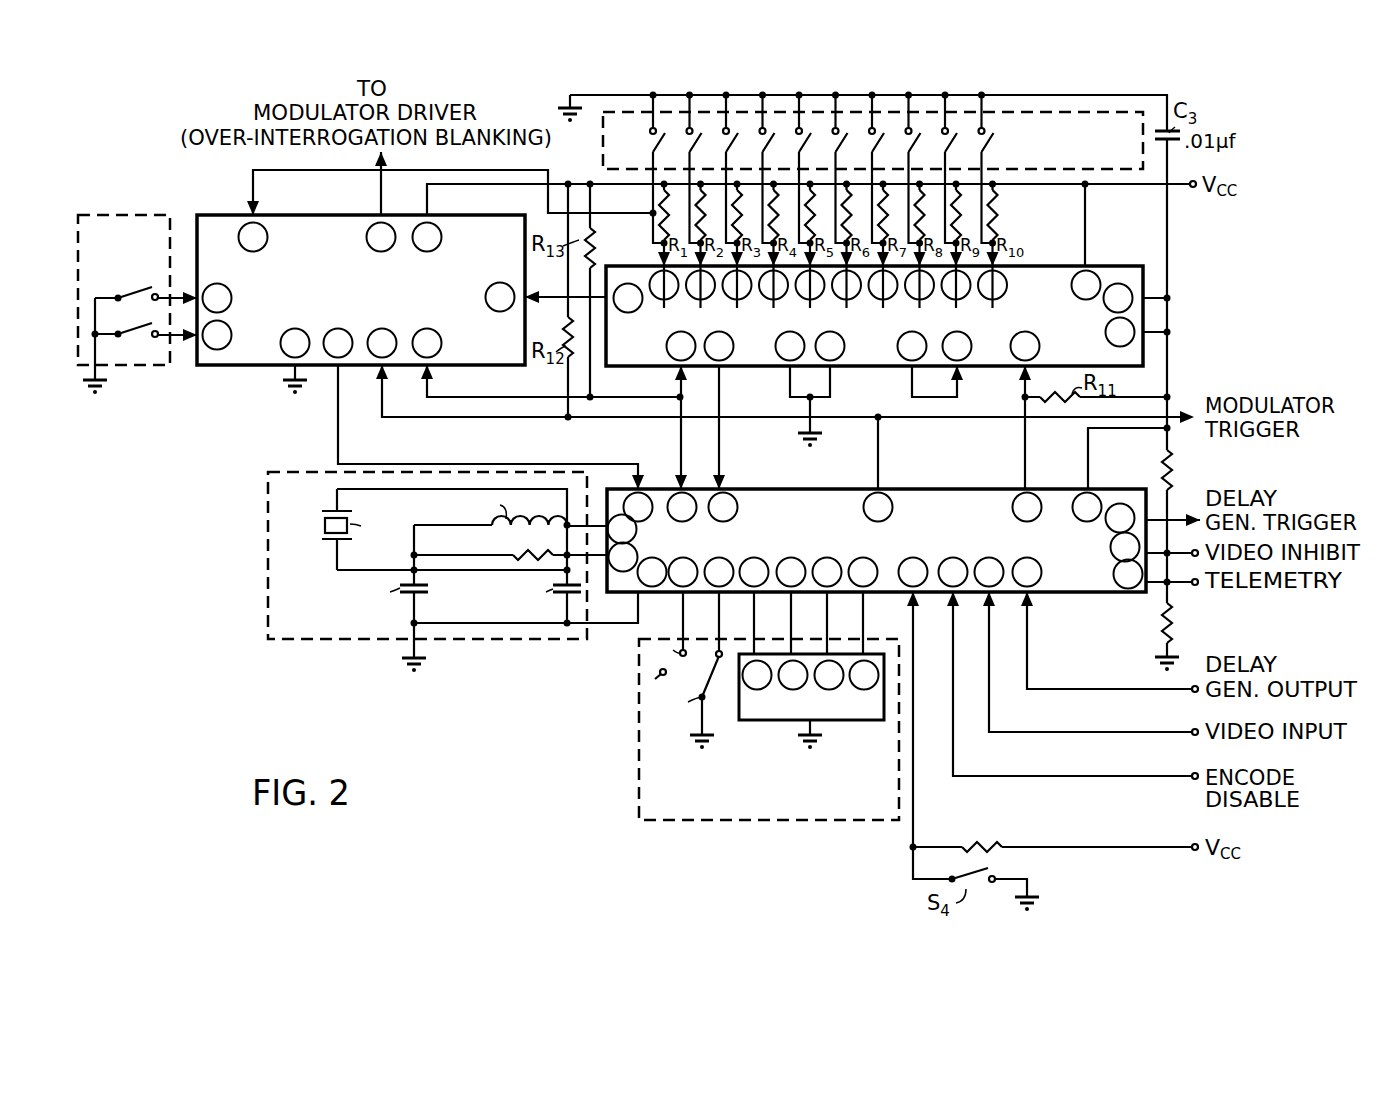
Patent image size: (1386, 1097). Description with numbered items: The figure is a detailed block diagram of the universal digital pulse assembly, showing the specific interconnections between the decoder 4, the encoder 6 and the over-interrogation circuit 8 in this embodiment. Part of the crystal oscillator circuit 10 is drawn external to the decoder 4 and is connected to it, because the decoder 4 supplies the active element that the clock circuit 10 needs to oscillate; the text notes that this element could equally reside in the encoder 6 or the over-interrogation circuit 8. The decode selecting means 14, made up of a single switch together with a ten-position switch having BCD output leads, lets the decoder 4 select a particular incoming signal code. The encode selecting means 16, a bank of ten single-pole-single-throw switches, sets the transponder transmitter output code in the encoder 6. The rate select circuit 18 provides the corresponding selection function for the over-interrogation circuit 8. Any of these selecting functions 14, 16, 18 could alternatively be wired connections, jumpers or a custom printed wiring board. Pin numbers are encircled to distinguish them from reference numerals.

The rate select circuit 18 is at (146, 204).
The over-interrogation control circuit 8 is at (213, 212).
The encode selecting means 16 is at (603, 160).
The encoder 6 is at (1120, 266).
The crystal oscillator circuit 10 is at (296, 470).
The decoder 4 is at (963, 489).
The decode selecting means 14 is at (639, 814).